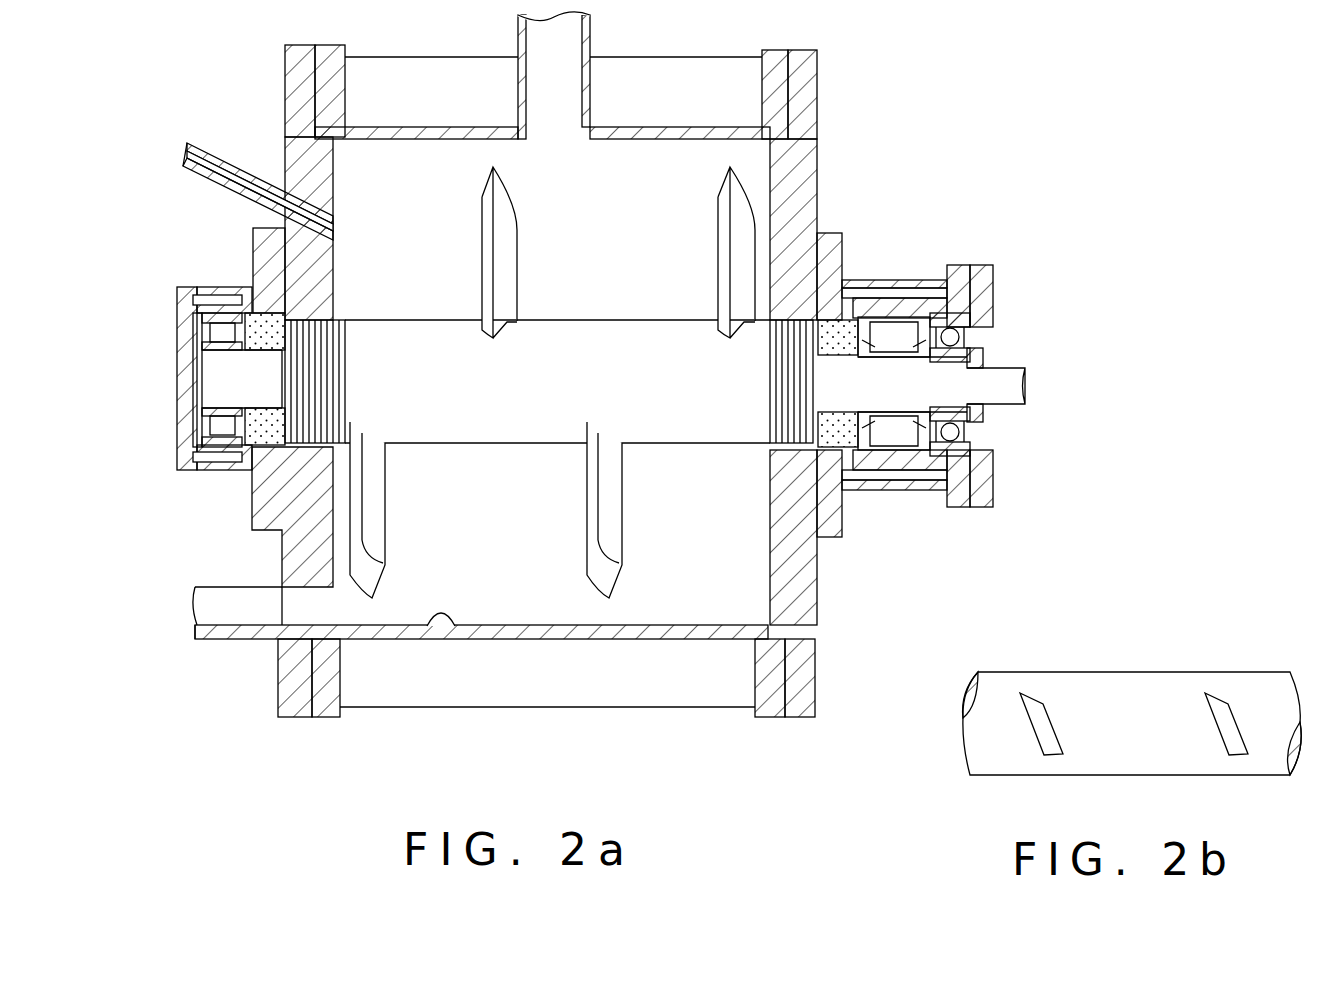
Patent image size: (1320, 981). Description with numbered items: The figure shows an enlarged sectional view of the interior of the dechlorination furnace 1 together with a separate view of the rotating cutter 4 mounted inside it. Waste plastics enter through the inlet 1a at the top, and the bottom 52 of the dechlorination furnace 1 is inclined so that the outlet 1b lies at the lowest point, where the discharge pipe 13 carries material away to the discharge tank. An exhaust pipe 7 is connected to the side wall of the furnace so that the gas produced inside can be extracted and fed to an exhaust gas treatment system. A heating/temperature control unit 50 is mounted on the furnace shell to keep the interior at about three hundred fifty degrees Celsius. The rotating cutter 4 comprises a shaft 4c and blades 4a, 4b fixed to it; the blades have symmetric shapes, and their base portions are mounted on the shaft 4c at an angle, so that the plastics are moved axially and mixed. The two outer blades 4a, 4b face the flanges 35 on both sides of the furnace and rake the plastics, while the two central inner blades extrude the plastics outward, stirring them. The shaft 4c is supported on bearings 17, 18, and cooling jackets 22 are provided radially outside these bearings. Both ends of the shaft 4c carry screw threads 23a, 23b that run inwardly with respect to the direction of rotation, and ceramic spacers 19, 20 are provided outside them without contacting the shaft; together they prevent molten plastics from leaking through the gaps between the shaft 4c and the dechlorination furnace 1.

In FIG. 2a, the dechlorination furnace 1 is at (780, 79).
In FIG. 2a, the inlet 1a is at (537, 45).
In FIG. 2a, the outlet 1b is at (300, 603).
In FIG. 2a, the rotating cutter 4 is at (557, 420).
In FIG. 2a, the blades 4a is at (612, 588).
In FIG. 2a, the blades 4b is at (503, 197).
In FIG. 2b, the blades 4b is at (1033, 710).
In FIG. 2a, the shaft 4c is at (633, 318).
In FIG. 2b, the shaft 4c is at (1132, 695).
In FIG. 2a, the exhaust pipe 7 is at (205, 150).
In FIG. 2a, the discharge pipe 13 is at (222, 603).
In FIG. 2a, the bearing 17 is at (972, 320).
In FIG. 2a, the bearing 18 is at (222, 325).
In FIG. 2a, the spacer 19 is at (252, 442).
In FIG. 2a, the spacer 20 is at (848, 320).
In FIG. 2a, the cooling jackets 22 is at (205, 460).
In FIG. 2a, the screw thread 23a is at (792, 455).
In FIG. 2a, the screw thread 23b is at (252, 515).
In FIG. 2a, the flanges 35 is at (818, 160).
In FIG. 2a, the heating/temperature control unit 50 is at (710, 75).
In FIG. 2a, the bottom 52 is at (432, 618).